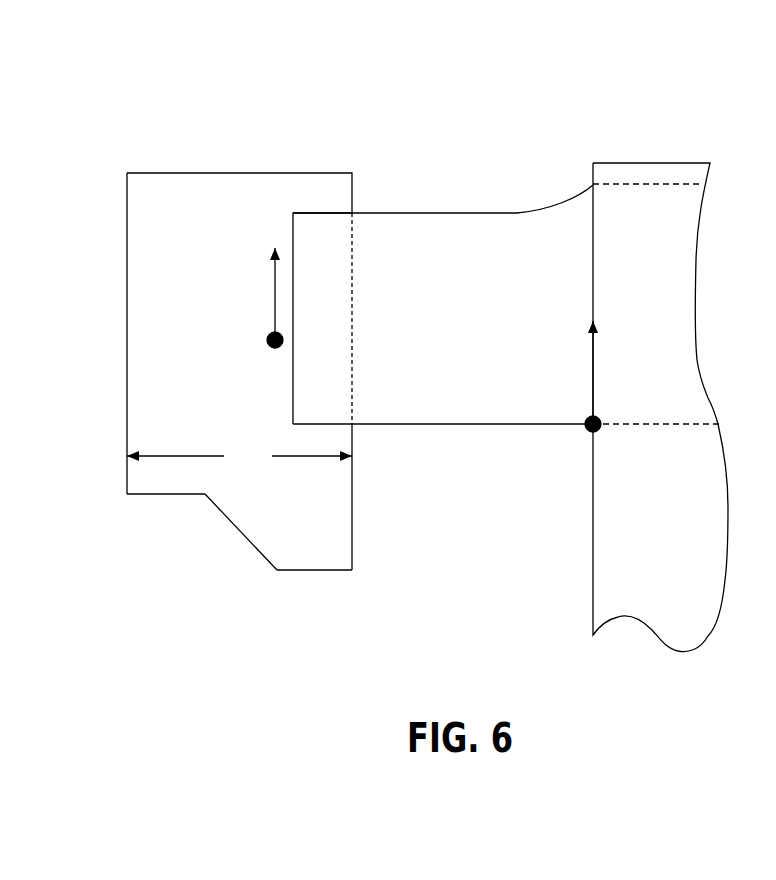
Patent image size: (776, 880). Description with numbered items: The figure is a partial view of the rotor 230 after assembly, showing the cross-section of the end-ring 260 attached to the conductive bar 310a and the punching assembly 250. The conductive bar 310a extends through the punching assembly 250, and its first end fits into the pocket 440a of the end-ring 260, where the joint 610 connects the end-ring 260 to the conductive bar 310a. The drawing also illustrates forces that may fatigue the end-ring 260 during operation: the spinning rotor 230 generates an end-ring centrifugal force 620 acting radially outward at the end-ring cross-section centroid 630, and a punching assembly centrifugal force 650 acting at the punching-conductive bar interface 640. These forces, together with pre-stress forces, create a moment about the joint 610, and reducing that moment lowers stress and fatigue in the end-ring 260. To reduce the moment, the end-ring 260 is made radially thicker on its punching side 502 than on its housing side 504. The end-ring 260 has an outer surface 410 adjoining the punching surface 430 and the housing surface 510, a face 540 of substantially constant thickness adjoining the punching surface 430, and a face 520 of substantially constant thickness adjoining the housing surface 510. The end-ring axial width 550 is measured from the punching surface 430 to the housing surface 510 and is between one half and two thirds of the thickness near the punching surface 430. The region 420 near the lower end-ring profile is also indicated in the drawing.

The rotor 230 is at (514, 354).
The punching assembly 250 is at (660, 407).
The end-ring 260 is at (236, 438).
The conductive bar 310a is at (443, 303).
The outer surface 410 is at (236, 413).
The inclined edge 420 is at (219, 631).
The punching surface 430 is at (359, 499).
The pocket 440a is at (331, 248).
The punching side 502 is at (331, 629).
The housing side 504 is at (176, 598).
The housing surface 510 is at (124, 353).
The face 520 is at (147, 496).
The face 540 is at (308, 578).
The end-ring axial width 550 is at (239, 457).
The joint 610 is at (363, 409).
The end-ring centrifugal force 620 is at (273, 297).
The end-ring cross-section centroid 630 is at (270, 350).
The punching-conductive bar interface 640 is at (589, 432).
The punching assembly centrifugal force 650 is at (592, 401).